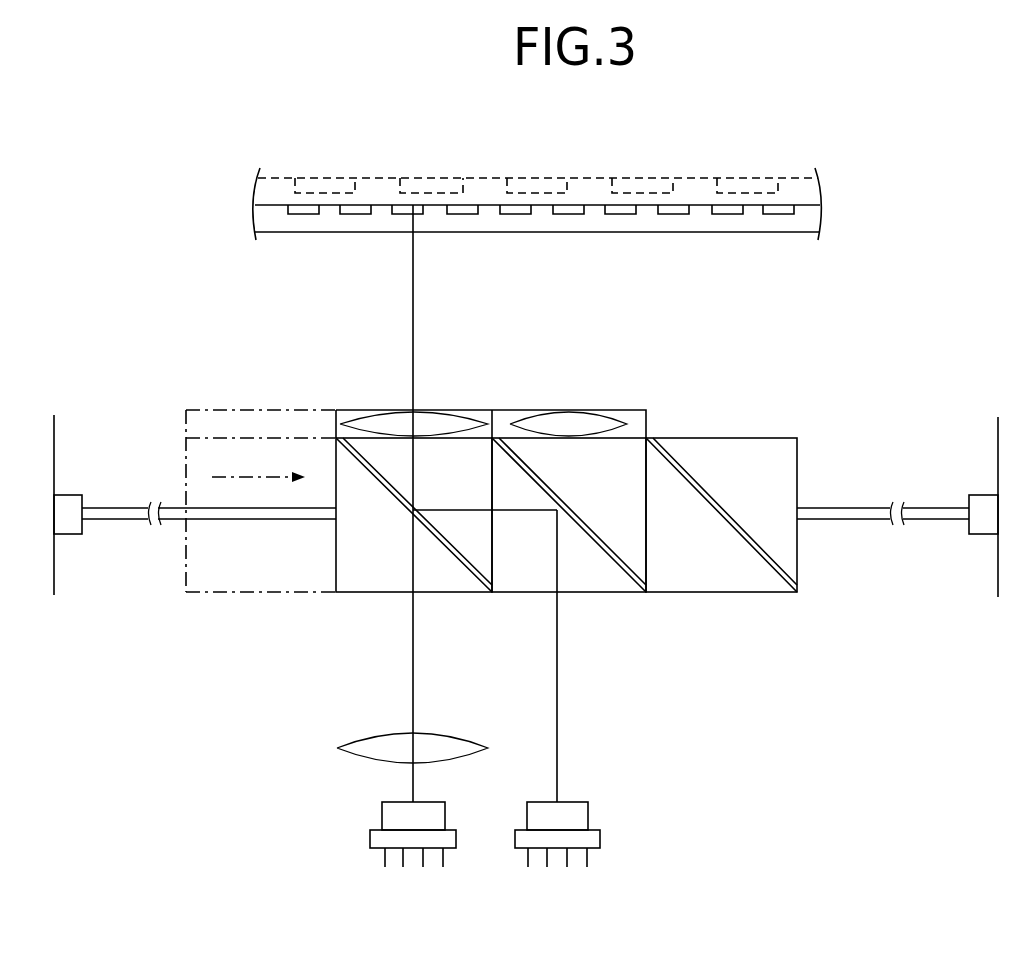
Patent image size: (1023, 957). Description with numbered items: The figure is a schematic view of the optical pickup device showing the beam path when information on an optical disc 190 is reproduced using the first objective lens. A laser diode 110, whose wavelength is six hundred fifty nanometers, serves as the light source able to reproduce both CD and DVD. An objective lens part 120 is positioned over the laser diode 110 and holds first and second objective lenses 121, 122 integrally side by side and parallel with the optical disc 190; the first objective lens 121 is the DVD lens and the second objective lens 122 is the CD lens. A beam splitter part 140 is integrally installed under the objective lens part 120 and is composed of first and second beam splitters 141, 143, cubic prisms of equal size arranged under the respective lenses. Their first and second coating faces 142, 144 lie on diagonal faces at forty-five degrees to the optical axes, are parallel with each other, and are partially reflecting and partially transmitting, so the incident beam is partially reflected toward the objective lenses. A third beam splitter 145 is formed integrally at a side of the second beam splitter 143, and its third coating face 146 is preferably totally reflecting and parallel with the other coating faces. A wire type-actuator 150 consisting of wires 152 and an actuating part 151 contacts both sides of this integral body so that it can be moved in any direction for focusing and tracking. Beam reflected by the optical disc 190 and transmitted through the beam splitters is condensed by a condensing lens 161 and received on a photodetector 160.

The laser diode 110 is at (590, 815).
The objective lens part 120 is at (553, 380).
The first objective lens 121 is at (397, 415).
The second objective lens 122 is at (567, 415).
The beam splitter part 140 is at (491, 576).
The first beam splitter 141 is at (414, 548).
The first coating face 142 is at (406, 503).
The second beam splitter 143 is at (564, 548).
The second coating face 144 is at (558, 504).
The third beam splitter 145 is at (721, 558).
The third coating face 146 is at (743, 488).
The drive unit 150 is at (529, 525).
The actuating part 151 is at (43, 448).
The wires 152 is at (110, 508).
The photodetector 160 is at (378, 818).
The condensing lens 161 is at (353, 750).
The optical disc 190 is at (805, 219).